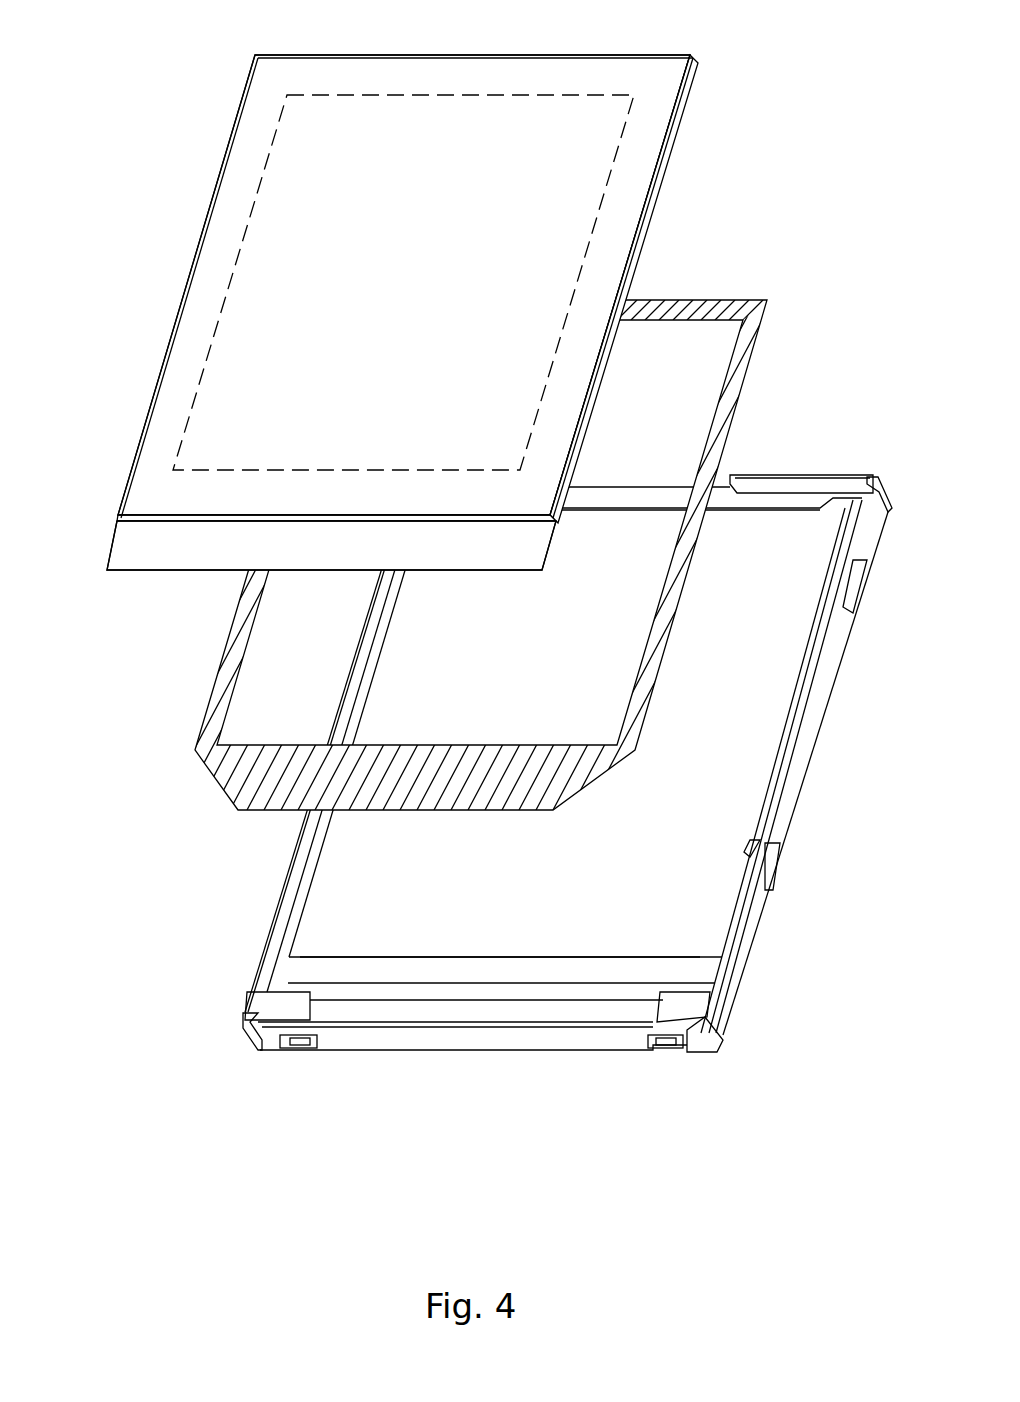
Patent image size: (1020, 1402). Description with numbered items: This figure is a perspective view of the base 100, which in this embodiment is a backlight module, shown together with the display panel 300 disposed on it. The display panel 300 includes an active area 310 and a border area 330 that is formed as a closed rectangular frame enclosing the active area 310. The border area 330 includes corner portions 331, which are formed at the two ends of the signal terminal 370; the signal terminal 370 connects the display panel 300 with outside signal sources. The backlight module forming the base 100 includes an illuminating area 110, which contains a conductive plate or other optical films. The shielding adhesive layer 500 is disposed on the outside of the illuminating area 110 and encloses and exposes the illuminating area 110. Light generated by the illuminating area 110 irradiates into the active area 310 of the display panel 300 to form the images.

The base 100 is at (797, 765).
The illuminating area 110 is at (648, 888).
The display panel 300 is at (687, 87).
The active area 310 is at (535, 95).
The border area 330 is at (232, 212).
The corner portion 331 is at (125, 540).
The signal terminal 370 is at (250, 557).
The shielding adhesive layer 500 is at (748, 365).